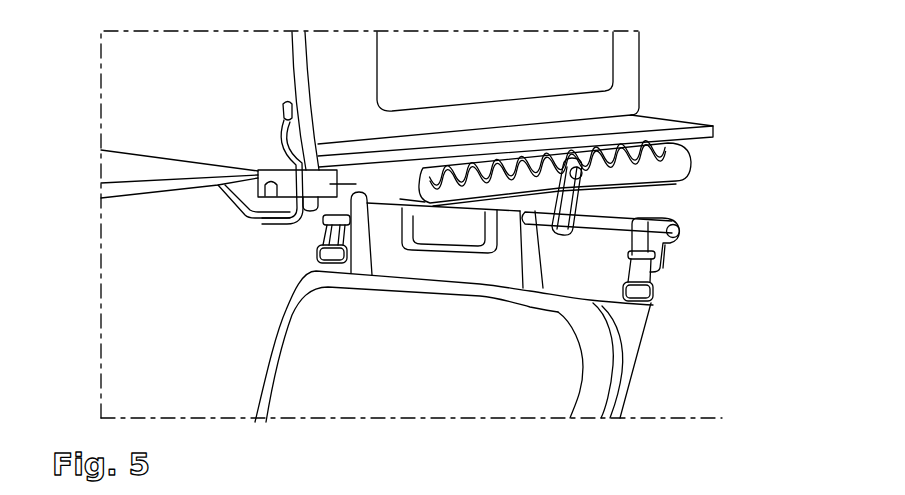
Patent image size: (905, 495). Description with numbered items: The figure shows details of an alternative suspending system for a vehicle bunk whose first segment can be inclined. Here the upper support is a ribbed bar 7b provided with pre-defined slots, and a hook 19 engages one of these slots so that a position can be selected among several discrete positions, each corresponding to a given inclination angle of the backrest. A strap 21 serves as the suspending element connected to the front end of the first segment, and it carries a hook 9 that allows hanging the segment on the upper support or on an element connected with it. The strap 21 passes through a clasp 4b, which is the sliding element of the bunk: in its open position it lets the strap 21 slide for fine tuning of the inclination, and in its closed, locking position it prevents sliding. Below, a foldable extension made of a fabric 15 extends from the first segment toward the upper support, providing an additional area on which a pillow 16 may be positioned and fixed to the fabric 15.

The ribbed bar 7b is at (694, 175).
The hook 19 is at (592, 203).
The strap 21 is at (650, 276).
The clasp 4b is at (310, 266).
The hook 9 is at (318, 234).
The pillow 16 is at (297, 343).
The fabric 15 is at (637, 362).